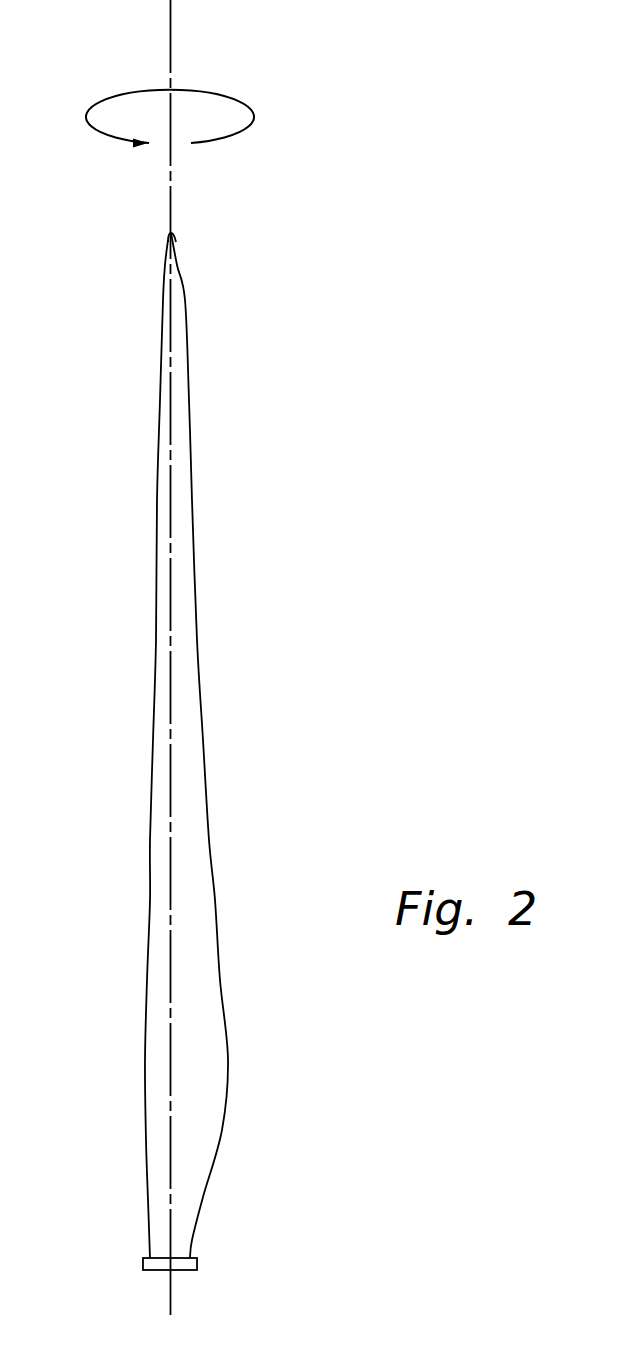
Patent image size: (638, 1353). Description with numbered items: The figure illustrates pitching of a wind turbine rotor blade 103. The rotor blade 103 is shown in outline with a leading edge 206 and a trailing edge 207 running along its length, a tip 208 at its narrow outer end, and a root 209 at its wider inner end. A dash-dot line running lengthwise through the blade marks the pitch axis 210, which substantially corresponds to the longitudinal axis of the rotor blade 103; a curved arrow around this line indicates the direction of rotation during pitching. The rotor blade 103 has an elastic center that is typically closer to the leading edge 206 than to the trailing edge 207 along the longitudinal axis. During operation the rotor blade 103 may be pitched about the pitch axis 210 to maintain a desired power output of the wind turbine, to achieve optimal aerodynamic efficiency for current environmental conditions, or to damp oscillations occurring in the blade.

The rotor blade 103 is at (448, 155).
The leading edge 206 is at (152, 768).
The trailing edge 207 is at (200, 680).
The tip 208 is at (199, 225).
The root 209 is at (230, 1290).
The pitch axis 210 is at (171, 11).